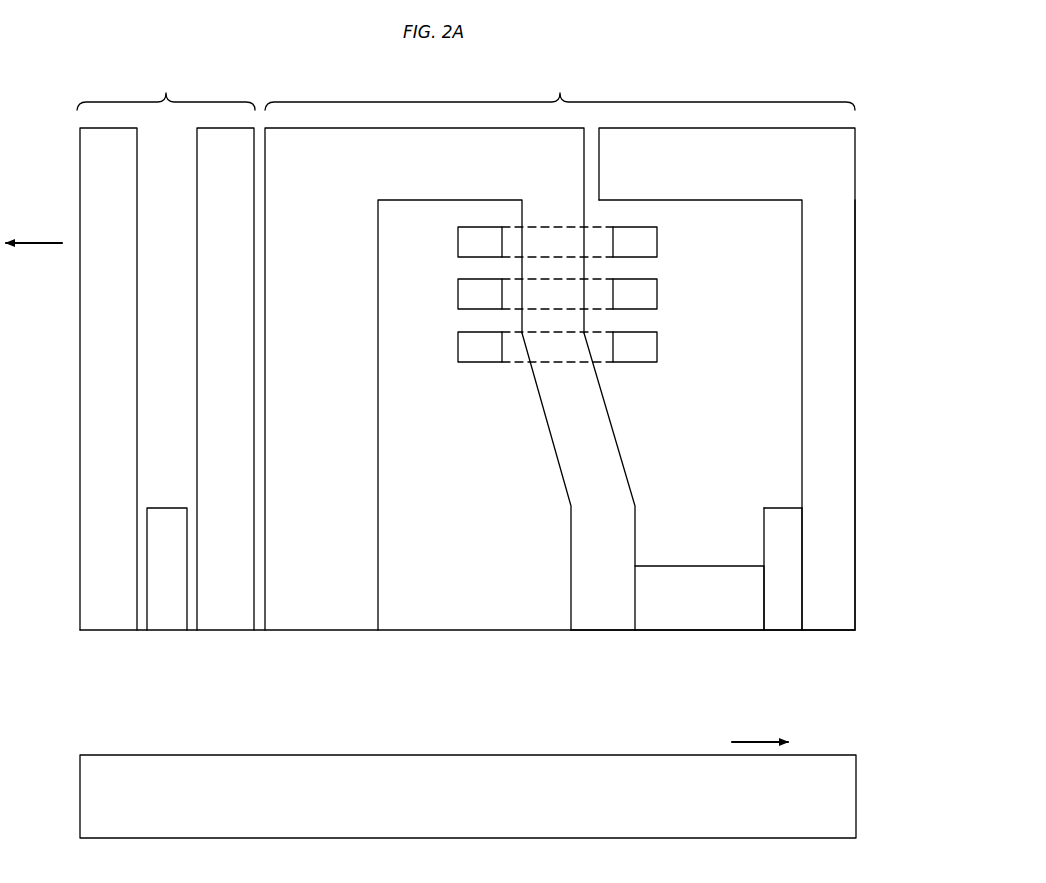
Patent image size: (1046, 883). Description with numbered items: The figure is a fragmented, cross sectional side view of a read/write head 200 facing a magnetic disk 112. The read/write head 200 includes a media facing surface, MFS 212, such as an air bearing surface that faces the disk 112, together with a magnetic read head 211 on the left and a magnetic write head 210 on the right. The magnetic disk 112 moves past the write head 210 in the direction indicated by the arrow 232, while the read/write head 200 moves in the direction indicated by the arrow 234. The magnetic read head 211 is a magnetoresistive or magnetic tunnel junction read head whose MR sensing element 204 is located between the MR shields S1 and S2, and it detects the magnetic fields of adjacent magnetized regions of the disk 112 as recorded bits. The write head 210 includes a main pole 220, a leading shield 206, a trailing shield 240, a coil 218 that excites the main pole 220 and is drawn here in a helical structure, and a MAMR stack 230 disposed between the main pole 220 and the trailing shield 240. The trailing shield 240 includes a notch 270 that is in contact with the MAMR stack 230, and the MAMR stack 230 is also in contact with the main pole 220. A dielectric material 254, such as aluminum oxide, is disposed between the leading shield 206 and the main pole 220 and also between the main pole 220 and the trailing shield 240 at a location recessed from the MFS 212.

The read/write head 200 is at (124, 46).
The magnetic read head 211 is at (166, 89).
The magnetic write head 210 is at (560, 349).
The MR shield S1 is at (107, 632).
The MR shield S2 is at (218, 632).
The MR sensing element 204 is at (158, 632).
The leading shield 206 is at (307, 632).
The dielectric material 254 is at (450, 605).
The coil 218 is at (480, 363).
The main pole 220 is at (590, 600).
The MFS 212 is at (604, 632).
The MAMR stack 230 is at (697, 612).
The notch 270 is at (780, 617).
The trailing shield 240 is at (837, 580).
The arrow 234 is at (45, 243).
The arrow 232 is at (755, 742).
The magnetic disk 112 is at (856, 795).